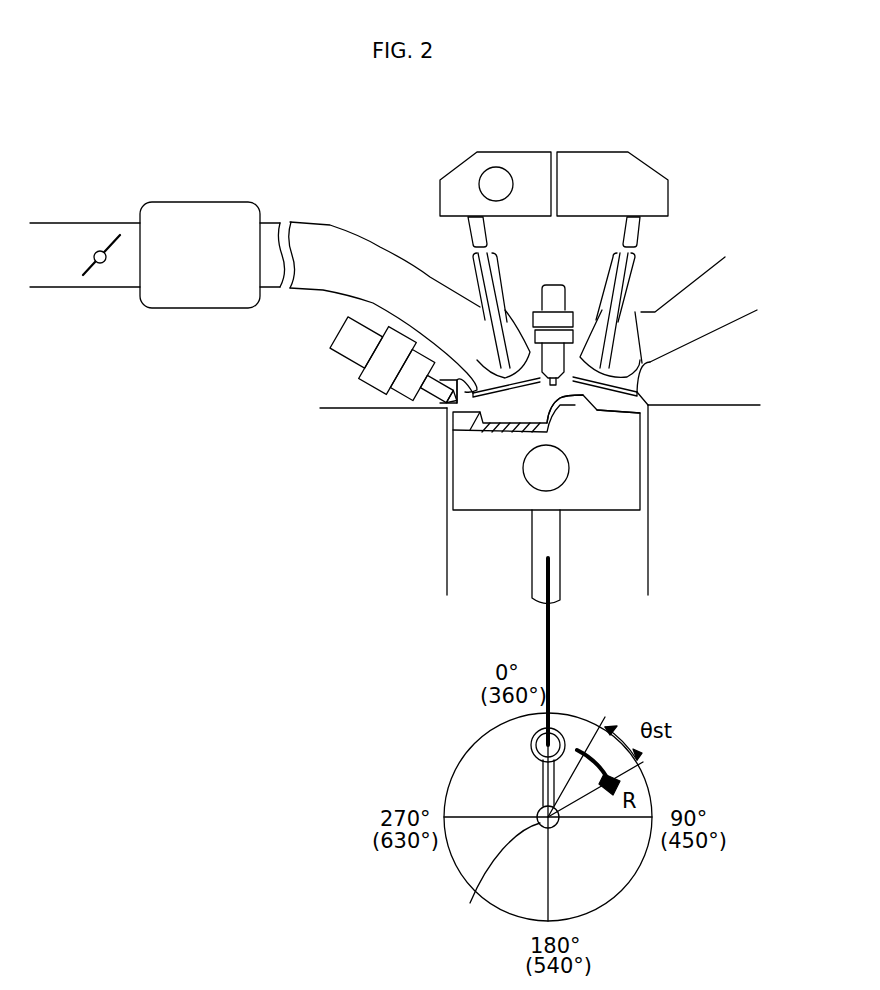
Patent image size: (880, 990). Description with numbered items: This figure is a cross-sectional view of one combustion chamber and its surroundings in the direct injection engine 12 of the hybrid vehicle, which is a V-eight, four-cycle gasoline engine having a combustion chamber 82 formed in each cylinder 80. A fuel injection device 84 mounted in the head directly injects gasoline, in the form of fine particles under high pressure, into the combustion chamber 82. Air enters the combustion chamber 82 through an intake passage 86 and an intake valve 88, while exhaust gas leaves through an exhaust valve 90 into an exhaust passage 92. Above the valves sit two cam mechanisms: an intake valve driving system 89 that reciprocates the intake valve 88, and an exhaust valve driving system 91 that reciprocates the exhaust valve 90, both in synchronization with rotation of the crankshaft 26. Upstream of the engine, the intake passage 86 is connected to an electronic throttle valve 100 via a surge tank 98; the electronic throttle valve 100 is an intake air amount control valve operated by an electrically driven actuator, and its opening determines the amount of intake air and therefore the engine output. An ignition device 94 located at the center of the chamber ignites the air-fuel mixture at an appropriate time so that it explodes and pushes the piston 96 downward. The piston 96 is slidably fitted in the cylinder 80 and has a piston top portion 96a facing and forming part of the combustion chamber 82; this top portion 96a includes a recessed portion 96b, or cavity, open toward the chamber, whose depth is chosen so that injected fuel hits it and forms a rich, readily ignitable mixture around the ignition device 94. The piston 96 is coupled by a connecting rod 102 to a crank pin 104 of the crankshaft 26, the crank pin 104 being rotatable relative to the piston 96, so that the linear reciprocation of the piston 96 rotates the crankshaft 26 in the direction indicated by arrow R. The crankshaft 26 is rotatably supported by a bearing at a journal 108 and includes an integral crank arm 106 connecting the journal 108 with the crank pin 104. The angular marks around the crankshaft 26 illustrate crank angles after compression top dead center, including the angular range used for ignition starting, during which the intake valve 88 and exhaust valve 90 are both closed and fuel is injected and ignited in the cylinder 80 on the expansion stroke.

The engine 12 is at (728, 193).
The crankshaft 26 is at (566, 838).
The cylinder 80 is at (653, 530).
The combustion chamber 82 is at (637, 400).
The fuel injection device 84 is at (347, 352).
The intake passage 86 is at (440, 290).
The intake valve 88 is at (535, 357).
The intake valve driving system 89 is at (523, 160).
The exhaust valve 90 is at (657, 358).
The exhaust valve driving system 91 is at (620, 157).
The exhaust passage 92 is at (662, 305).
The ignition device 94 is at (555, 302).
The piston 96 is at (605, 512).
The piston top portion 96a is at (633, 420).
The recessed portion 96b is at (583, 398).
The surge tank 98 is at (233, 208).
The electronic throttle valve 100 is at (105, 242).
The connecting rod 102 is at (552, 637).
The crank pin 104 is at (535, 747).
The crank arm 106 is at (545, 788).
The journal 108 is at (492, 879).